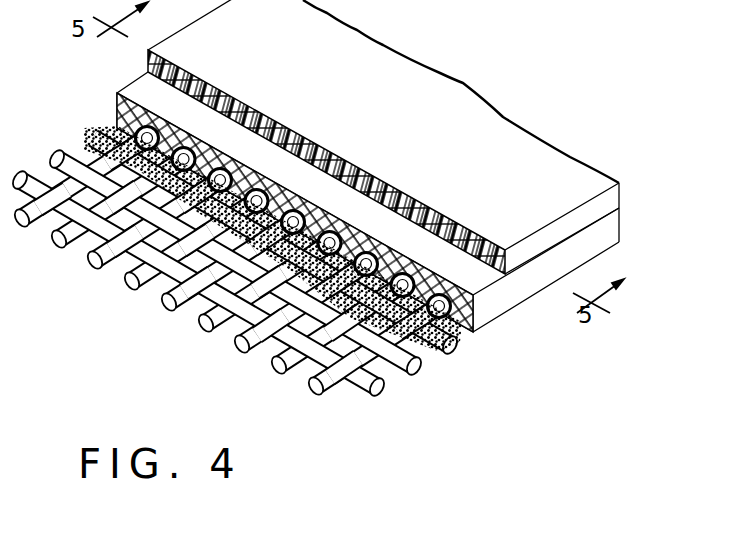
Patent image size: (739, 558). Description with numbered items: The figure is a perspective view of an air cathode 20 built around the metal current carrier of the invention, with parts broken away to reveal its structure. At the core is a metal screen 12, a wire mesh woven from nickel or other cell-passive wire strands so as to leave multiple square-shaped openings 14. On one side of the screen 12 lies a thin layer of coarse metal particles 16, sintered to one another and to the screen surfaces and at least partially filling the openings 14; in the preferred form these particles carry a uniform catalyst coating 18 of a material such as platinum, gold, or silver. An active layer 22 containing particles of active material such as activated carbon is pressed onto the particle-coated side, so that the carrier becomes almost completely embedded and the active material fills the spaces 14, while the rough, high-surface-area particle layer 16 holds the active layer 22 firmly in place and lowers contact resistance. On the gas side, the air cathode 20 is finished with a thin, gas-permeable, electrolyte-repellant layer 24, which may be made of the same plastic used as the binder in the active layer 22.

The metal screen 12 is at (235, 269).
The openings 14 is at (342, 347).
The thin layer of coarse metal particles 16 is at (85, 149).
The catalyst coating 18 is at (116, 116).
The air cathode 20 is at (351, 180).
The active layer 22 is at (492, 303).
The electrolyte-repellant layer 24 is at (572, 157).